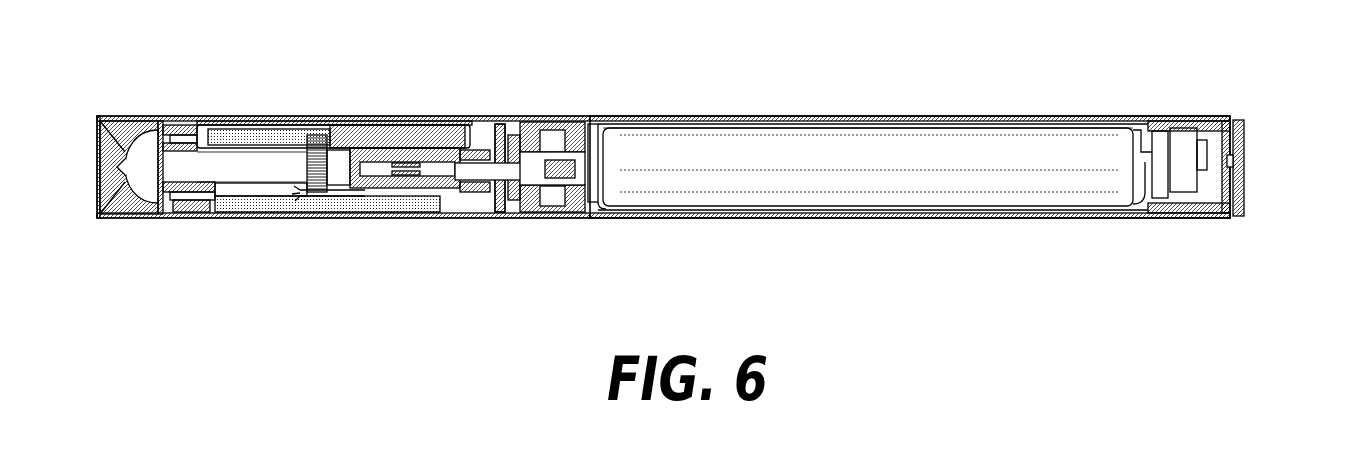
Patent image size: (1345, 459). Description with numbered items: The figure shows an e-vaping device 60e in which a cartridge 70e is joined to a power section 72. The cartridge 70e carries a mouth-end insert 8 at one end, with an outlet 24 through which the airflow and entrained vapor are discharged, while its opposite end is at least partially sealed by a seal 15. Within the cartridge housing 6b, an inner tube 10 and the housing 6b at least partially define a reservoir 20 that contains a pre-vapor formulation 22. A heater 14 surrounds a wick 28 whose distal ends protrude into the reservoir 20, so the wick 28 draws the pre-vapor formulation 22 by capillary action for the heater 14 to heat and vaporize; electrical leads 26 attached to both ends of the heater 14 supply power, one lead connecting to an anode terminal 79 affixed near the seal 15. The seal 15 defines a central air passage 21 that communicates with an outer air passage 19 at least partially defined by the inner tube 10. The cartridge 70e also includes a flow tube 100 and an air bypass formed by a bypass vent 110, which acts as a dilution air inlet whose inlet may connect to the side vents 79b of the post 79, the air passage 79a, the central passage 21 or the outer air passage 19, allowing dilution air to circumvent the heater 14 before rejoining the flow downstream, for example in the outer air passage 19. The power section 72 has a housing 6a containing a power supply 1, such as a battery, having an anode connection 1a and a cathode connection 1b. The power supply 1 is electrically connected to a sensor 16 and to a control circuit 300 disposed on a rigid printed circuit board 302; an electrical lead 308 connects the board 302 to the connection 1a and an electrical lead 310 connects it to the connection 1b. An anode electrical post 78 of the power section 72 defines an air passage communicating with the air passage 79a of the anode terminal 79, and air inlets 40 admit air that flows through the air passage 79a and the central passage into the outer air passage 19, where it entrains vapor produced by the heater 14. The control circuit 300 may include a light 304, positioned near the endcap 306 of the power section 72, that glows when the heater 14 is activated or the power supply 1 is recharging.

The power supply 1 is at (838, 145).
The anode connection 1a is at (590, 218).
The cathode connection 1b is at (1135, 218).
The housing of power section 6a is at (935, 116).
The housing of cartridge 6b is at (165, 116).
The mouth-end insert 8 is at (120, 117).
The inner tube 10 is at (228, 186).
The heater 14 is at (300, 165).
The seal 15 is at (421, 116).
The sensor 16 is at (1183, 128).
The outer air passage 19 is at (280, 176).
The reservoir 20 is at (245, 116).
The central air passage 21 is at (358, 200).
The pre-vapor formulation 22 is at (275, 116).
The outlet 24 is at (110, 188).
The electrical leads 26 is at (378, 116).
The wick 28 is at (308, 116).
The air inlets 40 is at (540, 218).
The e-vaping device 60e is at (597, 56).
The cartridge 70e is at (333, 98).
The power section 72 is at (781, 110).
The anode electrical post 78 is at (528, 116).
The anode terminal 79 is at (497, 116).
The air passage of anode terminal 79a is at (440, 218).
The side vents 79b is at (512, 116).
The flow tube 100 is at (458, 116).
The bypass vent 110 is at (222, 116).
The control circuit 300 is at (1157, 125).
The rigid printed circuit board 302 is at (1207, 150).
The light 304 is at (1232, 165).
The endcap 306 is at (1245, 118).
The electrical lead 308 is at (600, 116).
The electrical lead 310 is at (648, 218).